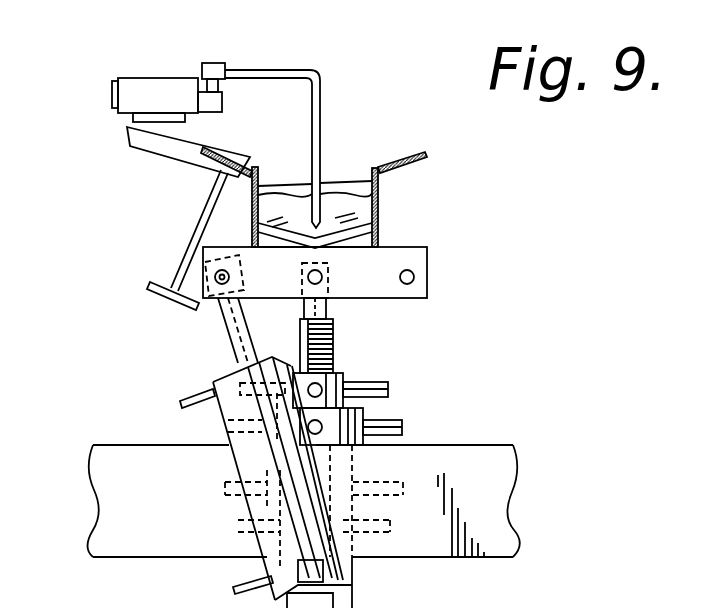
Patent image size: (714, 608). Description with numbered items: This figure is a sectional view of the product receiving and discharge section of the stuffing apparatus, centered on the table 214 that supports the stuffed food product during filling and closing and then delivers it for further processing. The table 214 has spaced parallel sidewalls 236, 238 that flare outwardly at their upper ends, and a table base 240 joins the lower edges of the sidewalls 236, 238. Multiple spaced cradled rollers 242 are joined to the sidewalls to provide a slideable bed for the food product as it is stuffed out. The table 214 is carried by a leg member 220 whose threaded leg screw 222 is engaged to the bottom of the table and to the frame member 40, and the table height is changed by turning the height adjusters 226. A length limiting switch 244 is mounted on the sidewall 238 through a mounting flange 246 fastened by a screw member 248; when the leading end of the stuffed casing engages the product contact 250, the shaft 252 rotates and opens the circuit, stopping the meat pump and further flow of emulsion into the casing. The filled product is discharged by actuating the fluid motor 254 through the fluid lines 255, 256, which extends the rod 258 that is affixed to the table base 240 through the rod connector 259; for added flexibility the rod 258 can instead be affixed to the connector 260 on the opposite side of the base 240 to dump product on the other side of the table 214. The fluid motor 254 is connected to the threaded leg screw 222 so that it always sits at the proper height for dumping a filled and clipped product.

The table 214 is at (375, 113).
The leg member 220 is at (432, 404).
The threaded leg screw 222 is at (333, 340).
The height adjuster 226 is at (405, 432).
The sidewall 236 is at (380, 222).
The sidewall 238 is at (222, 205).
The table base 240 is at (428, 262).
The cradled roller 242 is at (338, 183).
The length limiting switch 244 is at (150, 88).
The mounting flange 246 is at (152, 137).
The screw member 248 is at (184, 252).
The product contact 250 is at (380, 192).
The shaft 252 is at (213, 86).
The fluid motor 254 is at (243, 453).
The fluid line 255 is at (188, 397).
The fluid line 256 is at (243, 577).
The rod 258 is at (235, 338).
The rod connector 259 is at (218, 297).
The connector 260 is at (414, 282).
The frame member 40 is at (517, 480).